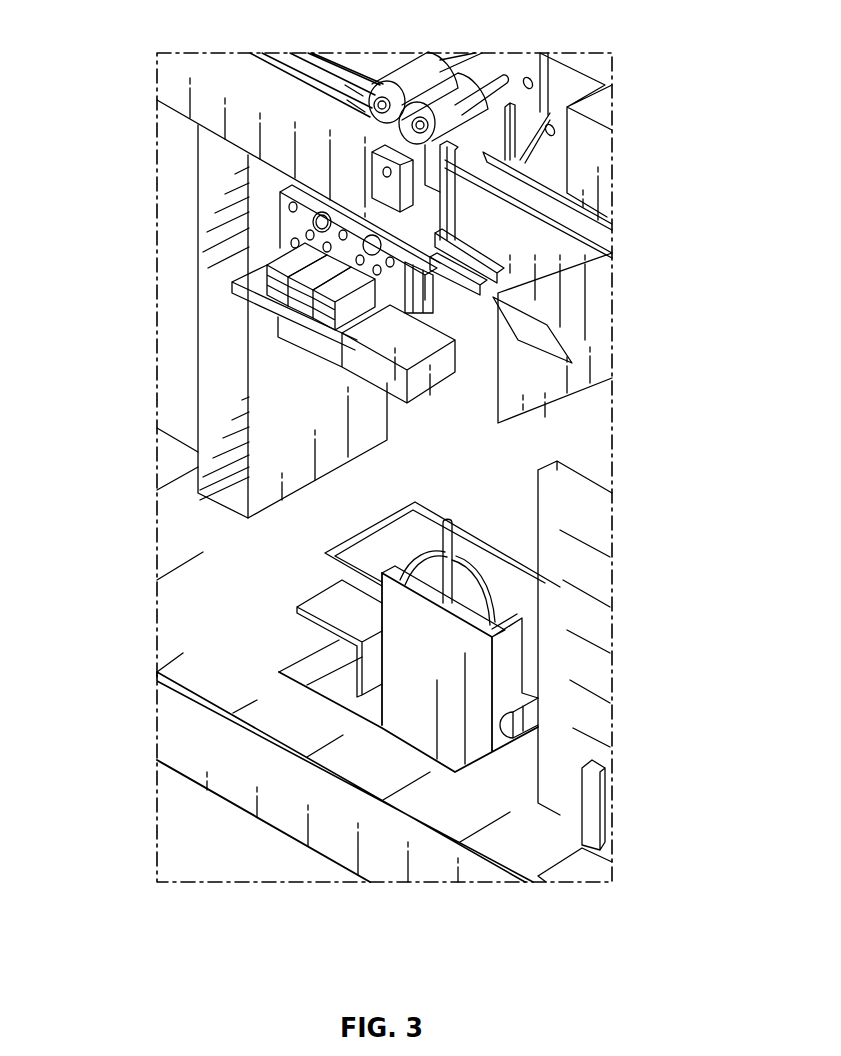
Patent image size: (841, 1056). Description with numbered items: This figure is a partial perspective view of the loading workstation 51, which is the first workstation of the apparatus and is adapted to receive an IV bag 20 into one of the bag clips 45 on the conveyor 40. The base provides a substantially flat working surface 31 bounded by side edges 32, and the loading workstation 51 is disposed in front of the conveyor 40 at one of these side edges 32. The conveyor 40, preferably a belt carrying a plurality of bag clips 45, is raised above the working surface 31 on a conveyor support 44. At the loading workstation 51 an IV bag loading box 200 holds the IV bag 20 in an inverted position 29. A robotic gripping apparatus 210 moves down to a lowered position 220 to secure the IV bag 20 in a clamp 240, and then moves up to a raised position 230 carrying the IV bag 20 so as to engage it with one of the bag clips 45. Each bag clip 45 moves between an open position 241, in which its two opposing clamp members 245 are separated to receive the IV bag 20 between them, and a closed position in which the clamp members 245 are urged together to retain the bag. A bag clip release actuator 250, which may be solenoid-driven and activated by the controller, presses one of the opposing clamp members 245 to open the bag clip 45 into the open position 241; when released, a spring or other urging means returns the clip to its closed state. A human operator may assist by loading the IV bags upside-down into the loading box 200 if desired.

The IV bag 20 is at (482, 575).
The inverted position 29 is at (447, 561).
The working surface 31 is at (167, 617).
The side edge 32 is at (222, 768).
The conveyor 40 is at (476, 189).
The conveyor support 44 is at (205, 185).
The bag clip 45 is at (420, 217).
The loading workstation 51 is at (125, 729).
The IV bag loading box 200 is at (417, 707).
The robotic gripping apparatus 210 is at (347, 370).
The lowered position 220 is at (272, 525).
The raised position 230 is at (180, 259).
The clamp 240 is at (440, 384).
The open position 241 is at (452, 335).
The opposing clamp member 245 is at (485, 290).
The bag clip release actuator 250 is at (458, 160).